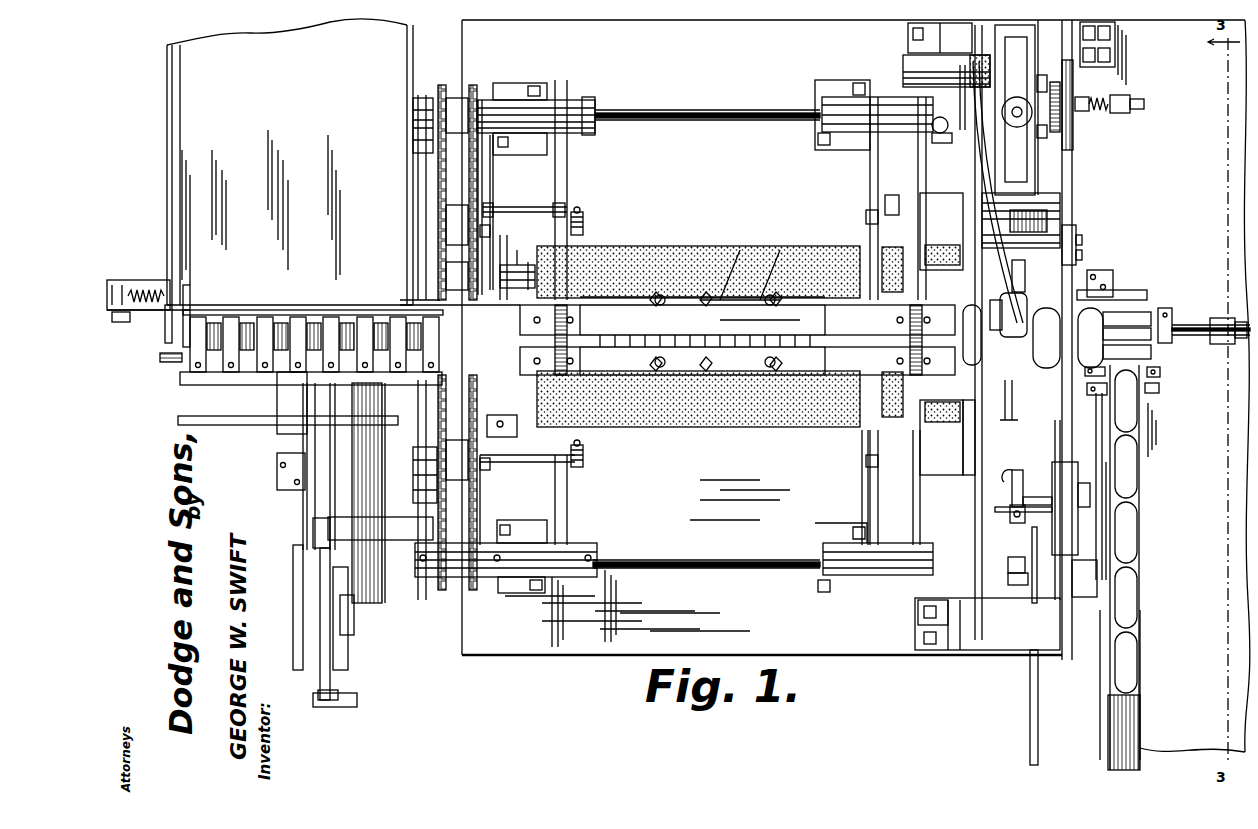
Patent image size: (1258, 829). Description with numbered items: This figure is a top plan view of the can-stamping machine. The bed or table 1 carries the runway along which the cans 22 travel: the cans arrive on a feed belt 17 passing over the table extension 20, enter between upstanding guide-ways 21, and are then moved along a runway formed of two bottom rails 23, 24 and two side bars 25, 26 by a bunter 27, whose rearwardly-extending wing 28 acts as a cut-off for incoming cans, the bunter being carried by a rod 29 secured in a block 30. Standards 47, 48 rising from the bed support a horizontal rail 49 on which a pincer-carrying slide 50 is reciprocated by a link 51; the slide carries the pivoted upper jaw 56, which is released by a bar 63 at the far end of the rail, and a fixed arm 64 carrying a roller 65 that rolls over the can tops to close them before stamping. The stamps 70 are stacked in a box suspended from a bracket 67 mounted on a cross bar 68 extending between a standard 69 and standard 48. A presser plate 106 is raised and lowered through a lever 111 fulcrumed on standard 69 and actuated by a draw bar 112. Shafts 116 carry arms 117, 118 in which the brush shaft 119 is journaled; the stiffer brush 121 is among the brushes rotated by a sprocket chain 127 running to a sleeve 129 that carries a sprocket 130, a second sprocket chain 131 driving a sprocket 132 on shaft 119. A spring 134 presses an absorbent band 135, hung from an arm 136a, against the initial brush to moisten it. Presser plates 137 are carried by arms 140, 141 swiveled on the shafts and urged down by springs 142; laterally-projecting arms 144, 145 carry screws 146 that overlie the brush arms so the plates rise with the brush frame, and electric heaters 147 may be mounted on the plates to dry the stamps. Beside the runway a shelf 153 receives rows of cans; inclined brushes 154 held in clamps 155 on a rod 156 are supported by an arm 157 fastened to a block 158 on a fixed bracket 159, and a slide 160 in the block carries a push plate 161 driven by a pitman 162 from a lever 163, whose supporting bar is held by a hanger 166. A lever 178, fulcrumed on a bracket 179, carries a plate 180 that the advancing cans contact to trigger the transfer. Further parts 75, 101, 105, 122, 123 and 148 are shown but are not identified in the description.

The bed or table 1 is at (652, 473).
The feed belt 17 is at (1130, 742).
The table extension 20 is at (1175, 540).
The upstanding guide-ways 21 is at (1146, 566).
The cans 22 is at (1128, 318).
The bottom rail 23 is at (1152, 352).
The bottom rail 24 is at (1128, 318).
The side bar 25 is at (208, 385).
The side bar 26 is at (418, 300).
The pusher plate or bunter 27 is at (1172, 328).
The rearwardly-extending wing 28 is at (1160, 380).
The rod 29 is at (1222, 320).
The block 30 is at (1240, 340).
The standard 47 is at (1112, 62).
The standard 48 is at (987, 624).
The rail or bar 49 is at (1074, 181).
The pincer-carrying slide 50 is at (1074, 529).
The link 51 is at (1028, 680).
The pivoted jaw 56 is at (1023, 478).
The bar 63 is at (1104, 478).
The fixed arm 64 is at (1031, 535).
The roller 65 is at (1008, 568).
The bracket 67 is at (1012, 36).
The cross bar 68 is at (1054, 516).
The standard 69 is at (940, 26).
The stamps 70 is at (1004, 408).
The bearing 75 is at (1074, 143).
The cam block 101 is at (1062, 204).
The cam 105 is at (1060, 216).
The plate 106 is at (1040, 295).
The lever 111 is at (978, 170).
The draw bar or rod 112 is at (948, 104).
The shaft 116 is at (680, 113).
The arm 117 is at (494, 243).
The arm 118 is at (862, 163).
The shaft 119 is at (494, 258).
The brush 121 is at (882, 260).
The hopper 122 is at (704, 250).
The shaft 123 is at (418, 166).
The sprocket chain 127 is at (437, 105).
The sleeve 129 is at (450, 98).
The sprocket 130 is at (477, 92).
The sprocket chain 131 is at (478, 168).
The sprocket 132 is at (540, 292).
The spring 134 is at (912, 188).
The band or strip 135 is at (941, 334).
The arm or bracket 136a is at (1012, 272).
The presser plate 137 is at (600, 290).
The arm 140 is at (870, 164).
The arm 141 is at (568, 156).
The springs 142 is at (586, 220).
The laterally-projecting arm 144 is at (862, 194).
The laterally-projecting arm 145 is at (540, 205).
The screw 146 is at (490, 228).
The electric heaters 147 is at (670, 434).
The plate 148 is at (716, 331).
The shelf or table 153 is at (290, 162).
The downwardly-inclined brushes 154 is at (248, 318).
The blocks or clamps 155 is at (282, 312).
The rod 156 is at (170, 365).
The arm or bracket 157 is at (280, 388).
The block 158 is at (302, 510).
The fixed bracket 159 is at (403, 523).
The slide 160 is at (300, 578).
The push plate 161 is at (232, 428).
The link or pitman 162 is at (322, 626).
The lever 163 is at (350, 668).
The hanger 166 is at (320, 500).
The lever 178 is at (150, 312).
The bracket 179 is at (130, 278).
The cross bar or plate 180 is at (190, 288).